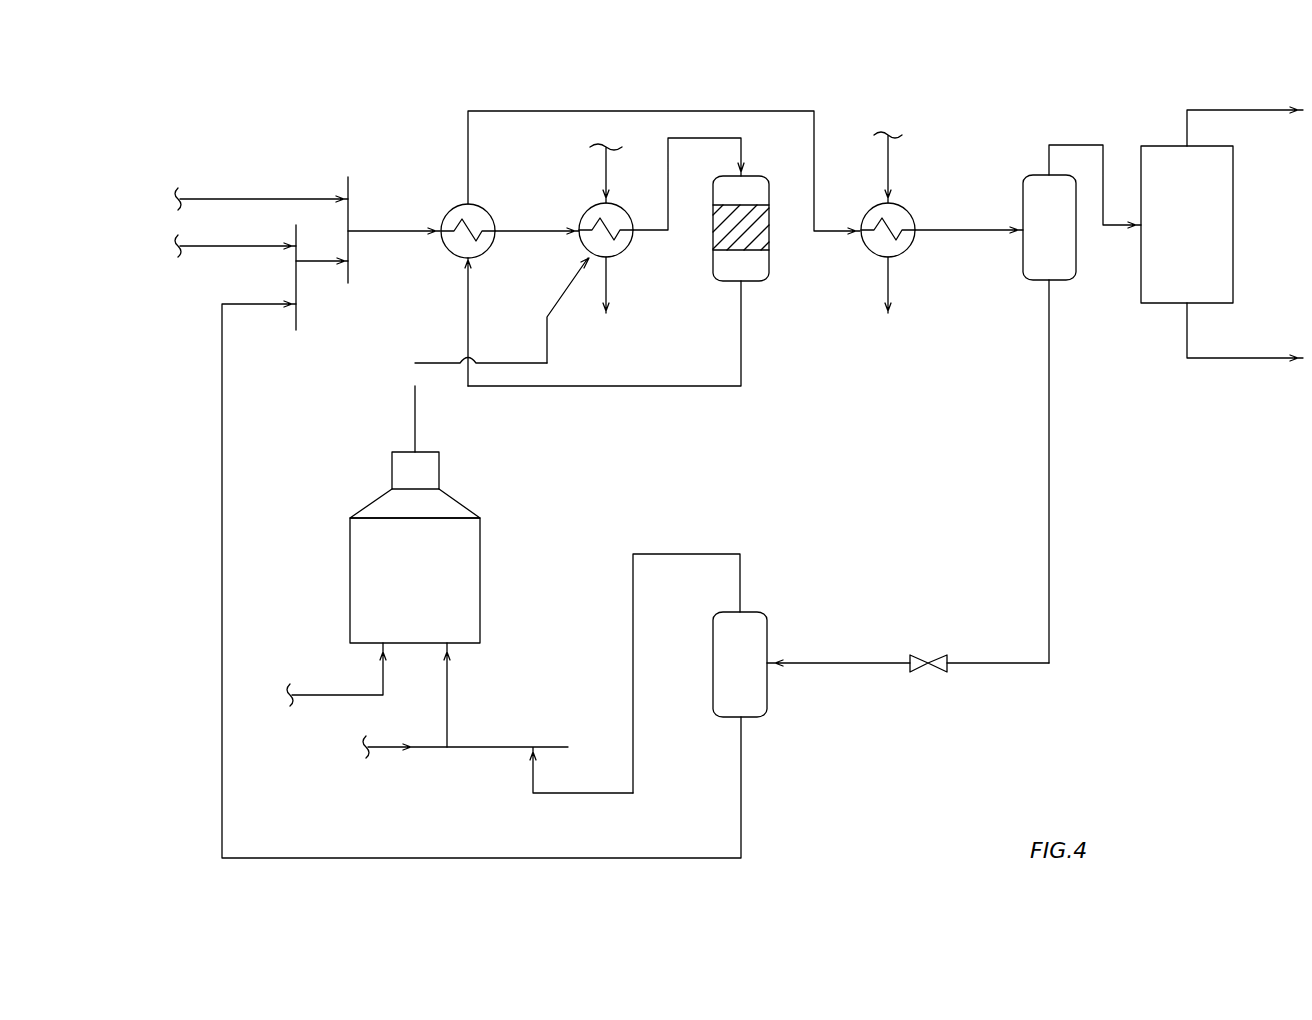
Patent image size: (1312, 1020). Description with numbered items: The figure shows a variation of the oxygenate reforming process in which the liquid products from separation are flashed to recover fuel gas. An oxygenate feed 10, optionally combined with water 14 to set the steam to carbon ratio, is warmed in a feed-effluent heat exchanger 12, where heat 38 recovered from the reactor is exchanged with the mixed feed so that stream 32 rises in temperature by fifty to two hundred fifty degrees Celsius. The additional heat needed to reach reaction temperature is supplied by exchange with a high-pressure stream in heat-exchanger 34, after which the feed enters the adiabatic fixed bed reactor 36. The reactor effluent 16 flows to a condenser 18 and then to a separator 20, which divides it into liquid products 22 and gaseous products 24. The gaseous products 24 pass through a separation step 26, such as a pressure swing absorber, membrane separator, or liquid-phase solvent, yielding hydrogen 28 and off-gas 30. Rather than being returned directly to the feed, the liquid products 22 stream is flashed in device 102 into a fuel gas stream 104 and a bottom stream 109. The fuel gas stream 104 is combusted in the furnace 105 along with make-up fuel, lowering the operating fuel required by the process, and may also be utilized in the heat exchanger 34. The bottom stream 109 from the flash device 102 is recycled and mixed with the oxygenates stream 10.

The oxygenate feed 10 is at (205, 250).
The feed-effluent heat exchanger 12 is at (452, 208).
The water 14 is at (238, 199).
The reactor effluent 16 is at (623, 111).
The condenser 18 is at (905, 205).
The separator 20 is at (1049, 419).
The liquid products 22 is at (935, 655).
The gaseous products 24 is at (1067, 145).
The separation step 26 is at (1187, 224).
The hydrogen 28 is at (1203, 108).
The off-gas 30 is at (1213, 356).
The stream 32 is at (510, 240).
The heat-exchanger 34 is at (632, 205).
The adiabatic fixed bed reactor 36 is at (750, 172).
The heat 38 is at (620, 386).
The flash device 102 is at (760, 612).
The fuel gas stream 104 is at (608, 793).
The furnace 105 is at (383, 566).
The bottom stream 109 is at (221, 510).